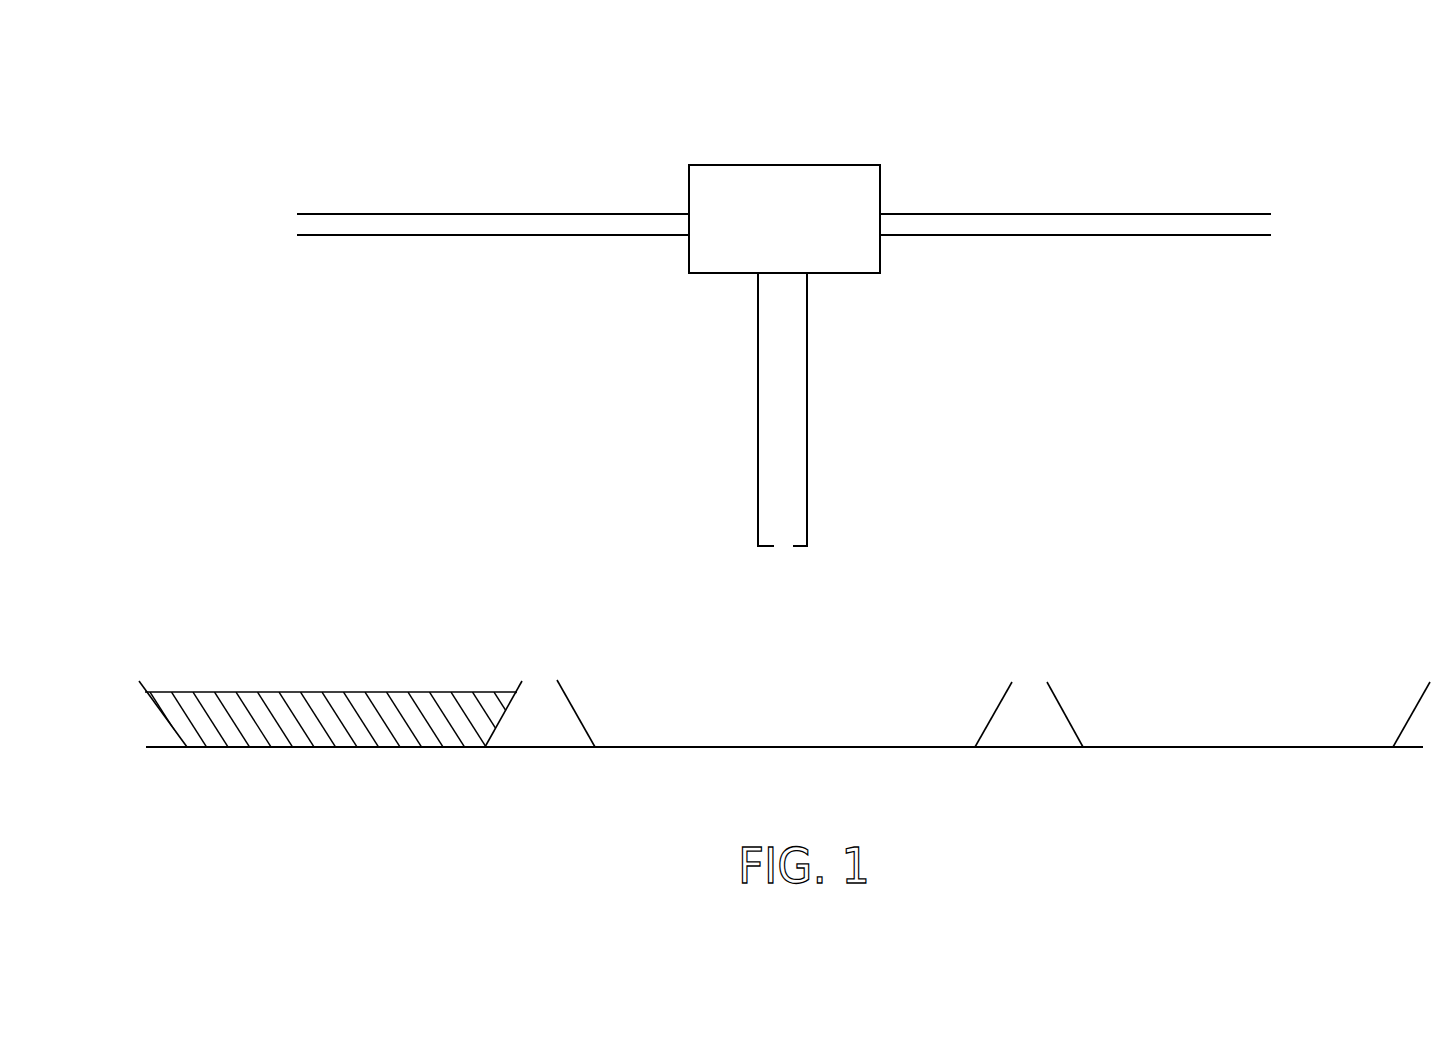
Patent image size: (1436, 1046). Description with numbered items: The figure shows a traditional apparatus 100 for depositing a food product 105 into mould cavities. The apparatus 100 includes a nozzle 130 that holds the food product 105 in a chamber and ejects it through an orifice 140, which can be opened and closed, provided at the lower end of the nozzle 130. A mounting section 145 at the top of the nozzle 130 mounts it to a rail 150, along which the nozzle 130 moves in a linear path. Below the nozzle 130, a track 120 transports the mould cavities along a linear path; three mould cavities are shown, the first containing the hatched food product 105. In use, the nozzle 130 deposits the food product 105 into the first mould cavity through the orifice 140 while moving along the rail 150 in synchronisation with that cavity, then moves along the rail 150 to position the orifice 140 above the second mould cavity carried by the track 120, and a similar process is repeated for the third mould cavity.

The apparatus 100 is at (1179, 73).
The food product 105 is at (272, 692).
The track 120 is at (570, 745).
The nozzle 130 is at (875, 138).
The orifice 140 is at (782, 548).
The mounting section 145 is at (752, 165).
The rail 150 is at (428, 220).